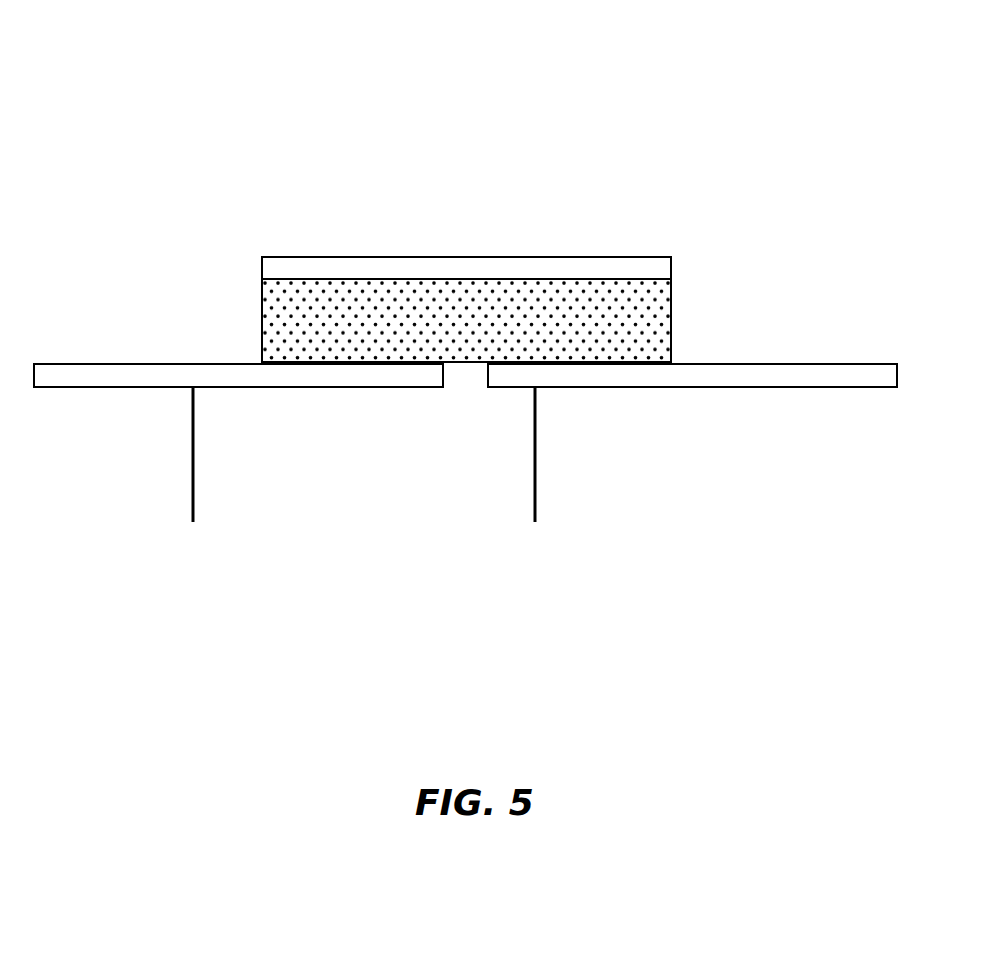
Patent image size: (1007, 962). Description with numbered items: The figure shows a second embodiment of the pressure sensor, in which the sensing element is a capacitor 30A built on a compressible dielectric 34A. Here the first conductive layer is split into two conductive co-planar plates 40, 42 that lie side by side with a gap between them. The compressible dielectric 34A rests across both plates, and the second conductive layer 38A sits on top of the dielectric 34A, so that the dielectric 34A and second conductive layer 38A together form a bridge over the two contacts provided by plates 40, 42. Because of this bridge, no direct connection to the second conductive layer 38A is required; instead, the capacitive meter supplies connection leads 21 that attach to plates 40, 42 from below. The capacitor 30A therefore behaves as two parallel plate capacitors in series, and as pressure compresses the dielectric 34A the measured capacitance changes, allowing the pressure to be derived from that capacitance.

The capacitor 30A is at (706, 112).
The second conductive layer 38A is at (673, 268).
The compressible dielectric 34A is at (262, 318).
The conductive co-planar plate 40 is at (735, 390).
The conductive co-planar plate 42 is at (158, 388).
The connection lead 21 is at (193, 483).